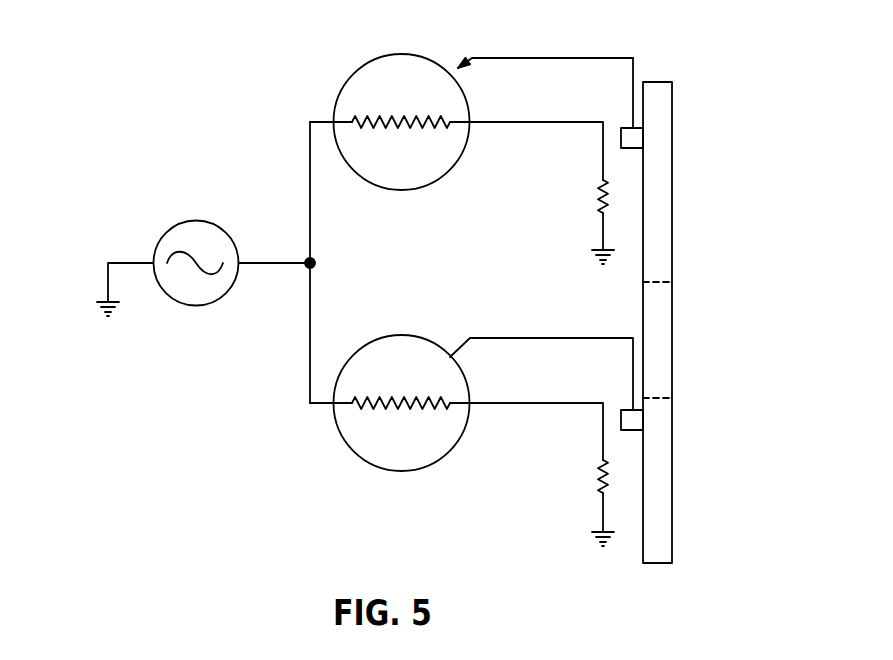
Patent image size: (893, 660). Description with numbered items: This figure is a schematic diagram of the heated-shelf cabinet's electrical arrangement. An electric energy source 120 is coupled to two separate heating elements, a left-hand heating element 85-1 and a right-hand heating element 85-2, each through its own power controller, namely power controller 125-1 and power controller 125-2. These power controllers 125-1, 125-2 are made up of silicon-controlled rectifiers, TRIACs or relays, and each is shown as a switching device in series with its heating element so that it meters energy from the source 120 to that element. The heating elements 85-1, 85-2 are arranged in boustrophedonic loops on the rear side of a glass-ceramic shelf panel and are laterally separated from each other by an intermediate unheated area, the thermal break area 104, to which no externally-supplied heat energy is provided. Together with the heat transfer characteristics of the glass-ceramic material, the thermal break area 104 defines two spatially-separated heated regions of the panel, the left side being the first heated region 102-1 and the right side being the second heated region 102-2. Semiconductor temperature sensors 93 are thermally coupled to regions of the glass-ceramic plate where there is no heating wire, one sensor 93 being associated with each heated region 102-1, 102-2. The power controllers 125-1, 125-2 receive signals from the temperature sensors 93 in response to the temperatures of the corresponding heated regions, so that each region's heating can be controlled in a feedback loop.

The electric energy source 120 is at (163, 233).
The power controller 125-1 is at (357, 73).
The power controller 125-2 is at (355, 453).
The left-hand heating element 85-1 is at (598, 188).
The right-hand heating element 85-2 is at (598, 470).
The semiconductor temperature sensor 93 is at (633, 148).
The first heated region 102-1 is at (673, 95).
The second heated region 102-2 is at (673, 507).
The thermal break area 104 is at (673, 320).